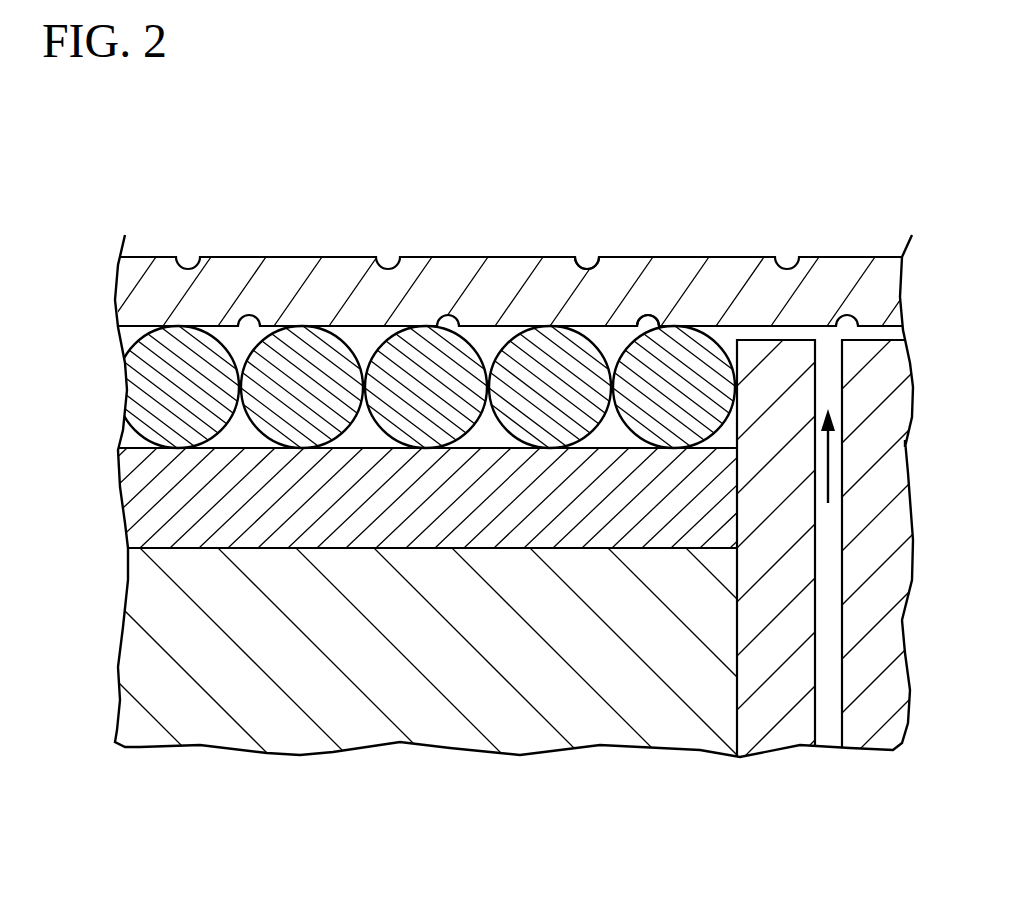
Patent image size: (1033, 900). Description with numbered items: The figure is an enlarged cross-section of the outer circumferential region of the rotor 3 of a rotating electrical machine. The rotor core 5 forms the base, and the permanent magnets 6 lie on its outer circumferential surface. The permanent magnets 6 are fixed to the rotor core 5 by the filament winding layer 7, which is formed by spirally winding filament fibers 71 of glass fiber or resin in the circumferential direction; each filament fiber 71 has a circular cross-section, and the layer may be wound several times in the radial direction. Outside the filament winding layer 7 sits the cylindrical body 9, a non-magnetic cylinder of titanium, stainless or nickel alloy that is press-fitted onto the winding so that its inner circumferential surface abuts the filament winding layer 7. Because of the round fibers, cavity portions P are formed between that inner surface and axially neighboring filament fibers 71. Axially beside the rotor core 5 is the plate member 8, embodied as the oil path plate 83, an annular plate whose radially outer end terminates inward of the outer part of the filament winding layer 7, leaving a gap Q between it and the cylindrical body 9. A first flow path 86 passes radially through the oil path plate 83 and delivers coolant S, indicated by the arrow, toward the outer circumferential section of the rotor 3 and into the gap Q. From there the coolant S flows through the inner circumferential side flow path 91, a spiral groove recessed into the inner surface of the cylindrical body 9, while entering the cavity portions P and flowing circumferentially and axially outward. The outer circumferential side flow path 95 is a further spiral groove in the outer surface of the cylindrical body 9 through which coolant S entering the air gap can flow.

The rotor 3 is at (728, 225).
The rotor core 5 is at (380, 688).
The permanent magnets 6 is at (212, 508).
The filament winding layer 7 is at (426, 322).
The filament fiber 71 is at (415, 357).
The plate member 8 is at (810, 450).
The oil path plate 83 is at (768, 700).
The first flow path 86 is at (840, 632).
The cylindrical body 9 is at (325, 288).
The inner circumferential side flow path 91 is at (648, 322).
The outer circumferential side flow path 95 is at (587, 257).
The cavity portion P is at (233, 347).
The gap Q is at (792, 340).
The coolant S is at (830, 458).